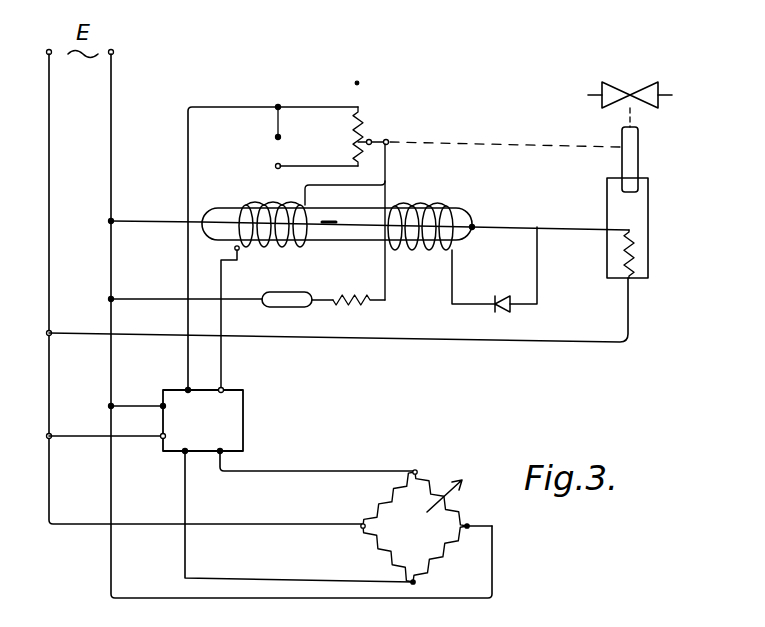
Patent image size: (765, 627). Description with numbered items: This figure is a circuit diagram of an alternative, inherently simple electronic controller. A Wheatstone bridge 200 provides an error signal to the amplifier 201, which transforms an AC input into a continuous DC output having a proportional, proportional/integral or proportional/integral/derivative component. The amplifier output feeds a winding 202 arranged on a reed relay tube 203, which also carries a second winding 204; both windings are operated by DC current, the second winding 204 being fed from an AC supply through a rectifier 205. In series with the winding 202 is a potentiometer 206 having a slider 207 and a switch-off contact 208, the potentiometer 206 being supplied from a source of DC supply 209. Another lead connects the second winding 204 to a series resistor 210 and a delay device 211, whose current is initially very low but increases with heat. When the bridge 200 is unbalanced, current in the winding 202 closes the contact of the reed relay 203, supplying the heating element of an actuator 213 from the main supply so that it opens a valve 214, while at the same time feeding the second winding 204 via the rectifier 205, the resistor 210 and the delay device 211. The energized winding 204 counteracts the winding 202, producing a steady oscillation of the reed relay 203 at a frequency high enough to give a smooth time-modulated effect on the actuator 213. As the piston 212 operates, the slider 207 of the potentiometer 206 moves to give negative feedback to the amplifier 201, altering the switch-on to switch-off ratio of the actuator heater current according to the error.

The Wheatstone bridge 200 is at (426, 527).
The amplifier 201 is at (202, 421).
The winding 202 is at (264, 285).
The reed relay tube 203 is at (337, 237).
The second winding 204 is at (420, 215).
The rectifier 205 is at (494, 269).
The potentiometer 206 is at (379, 132).
The slider 207 is at (505, 133).
The switch-off contact 208 is at (341, 108).
The source of DC supply 209 is at (294, 156).
The series resistor 210 is at (359, 313).
The delay device 211 is at (297, 290).
The piston 212 is at (638, 150).
The actuator 213 is at (648, 242).
The valve 214 is at (630, 85).